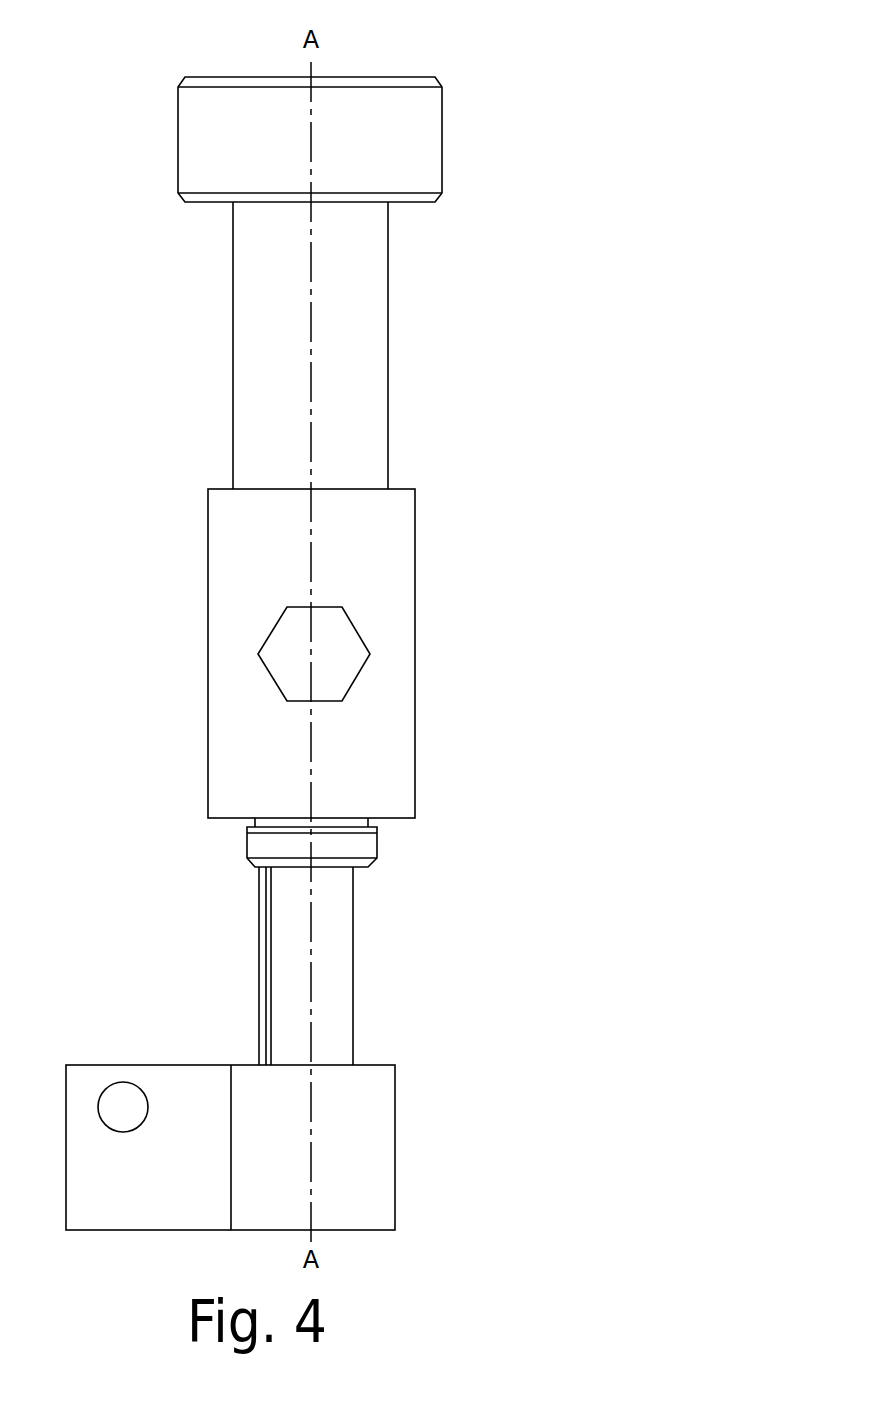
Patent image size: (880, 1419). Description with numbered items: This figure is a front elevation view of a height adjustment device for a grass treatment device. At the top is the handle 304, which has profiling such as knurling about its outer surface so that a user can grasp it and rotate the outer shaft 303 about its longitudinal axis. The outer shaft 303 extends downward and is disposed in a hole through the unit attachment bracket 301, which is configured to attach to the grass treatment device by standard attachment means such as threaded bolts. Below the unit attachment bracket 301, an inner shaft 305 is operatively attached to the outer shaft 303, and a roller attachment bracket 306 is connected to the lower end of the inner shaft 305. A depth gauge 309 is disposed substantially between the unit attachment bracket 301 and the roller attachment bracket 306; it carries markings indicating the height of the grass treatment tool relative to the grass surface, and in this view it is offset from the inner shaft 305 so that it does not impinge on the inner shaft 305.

The unit attachment bracket 301 is at (415, 567).
The outer shaft 303 is at (388, 307).
The handle 304 is at (442, 143).
The inner shaft 305 is at (353, 930).
The roller attachment bracket 306 is at (395, 1082).
The depth gauge 309 is at (258, 937).